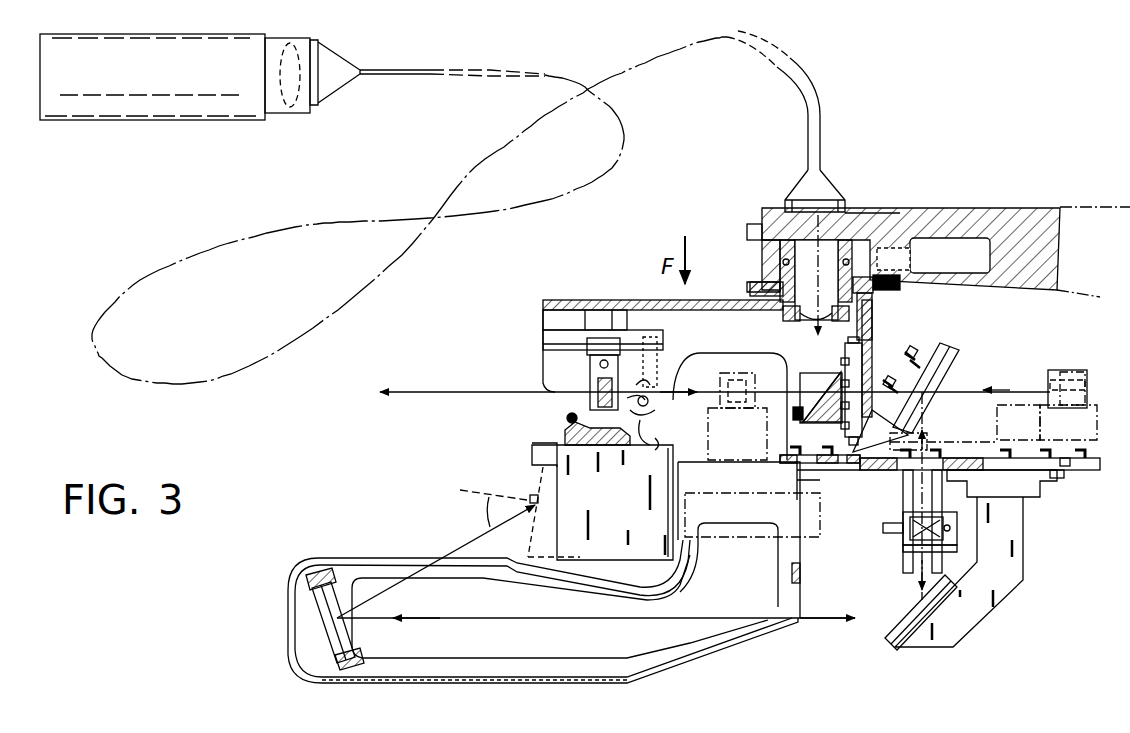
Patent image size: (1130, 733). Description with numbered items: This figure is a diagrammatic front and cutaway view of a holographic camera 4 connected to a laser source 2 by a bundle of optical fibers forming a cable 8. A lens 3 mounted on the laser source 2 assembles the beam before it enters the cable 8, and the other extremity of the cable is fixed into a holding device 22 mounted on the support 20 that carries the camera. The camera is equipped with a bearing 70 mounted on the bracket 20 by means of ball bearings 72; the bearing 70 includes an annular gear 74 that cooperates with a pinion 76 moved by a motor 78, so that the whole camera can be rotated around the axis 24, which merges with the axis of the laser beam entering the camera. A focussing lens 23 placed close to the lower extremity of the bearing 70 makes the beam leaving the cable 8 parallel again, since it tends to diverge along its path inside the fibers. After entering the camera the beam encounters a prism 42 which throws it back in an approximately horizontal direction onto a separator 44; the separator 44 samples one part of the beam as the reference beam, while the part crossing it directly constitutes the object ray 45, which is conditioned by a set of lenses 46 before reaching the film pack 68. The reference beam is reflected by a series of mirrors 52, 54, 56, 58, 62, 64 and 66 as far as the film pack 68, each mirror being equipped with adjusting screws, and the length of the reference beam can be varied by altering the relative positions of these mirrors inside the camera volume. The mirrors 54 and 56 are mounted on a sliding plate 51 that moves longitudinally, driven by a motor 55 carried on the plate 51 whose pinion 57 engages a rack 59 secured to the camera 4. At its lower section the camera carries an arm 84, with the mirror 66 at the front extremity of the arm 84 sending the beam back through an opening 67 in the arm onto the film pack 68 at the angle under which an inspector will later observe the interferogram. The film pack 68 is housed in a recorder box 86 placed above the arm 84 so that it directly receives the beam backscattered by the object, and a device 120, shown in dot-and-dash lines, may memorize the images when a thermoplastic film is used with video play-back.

The laser source 2 is at (72, 103).
The lens 3 is at (283, 112).
The bundle of optical fibers 8 is at (810, 106).
The fiber connector 22 is at (822, 190).
The axis 24 is at (873, 213).
The motor 78 is at (968, 212).
The bearing 70 is at (748, 224).
The support 20 is at (938, 224).
The ball bearings 72 is at (775, 262).
The annular gear 74 is at (880, 294).
The pinion 76 is at (902, 288).
The camera 4 is at (585, 282).
The set of lenses 46 is at (597, 387).
The object ray 45 is at (420, 395).
The prism 42 is at (805, 408).
The separator 44 is at (743, 373).
The mirror 52 is at (737, 391).
The recorder box 86 is at (548, 447).
The film pack 68 is at (540, 487).
The opening 67 is at (380, 558).
The arm 84 is at (672, 668).
The device for memorizing images 120 is at (764, 538).
The mirror 66 is at (345, 640).
The focussing lens 23 is at (842, 322).
The mirror 58 is at (960, 372).
The mirror 56 is at (1058, 372).
The mirror 54 is at (1067, 385).
The motor 55 is at (1030, 412).
The pinion 57 is at (1000, 455).
The rack 59 is at (1060, 470).
The sliding plate 51 is at (1062, 468).
The mirror 62 is at (900, 545).
The mirror 64 is at (890, 637).